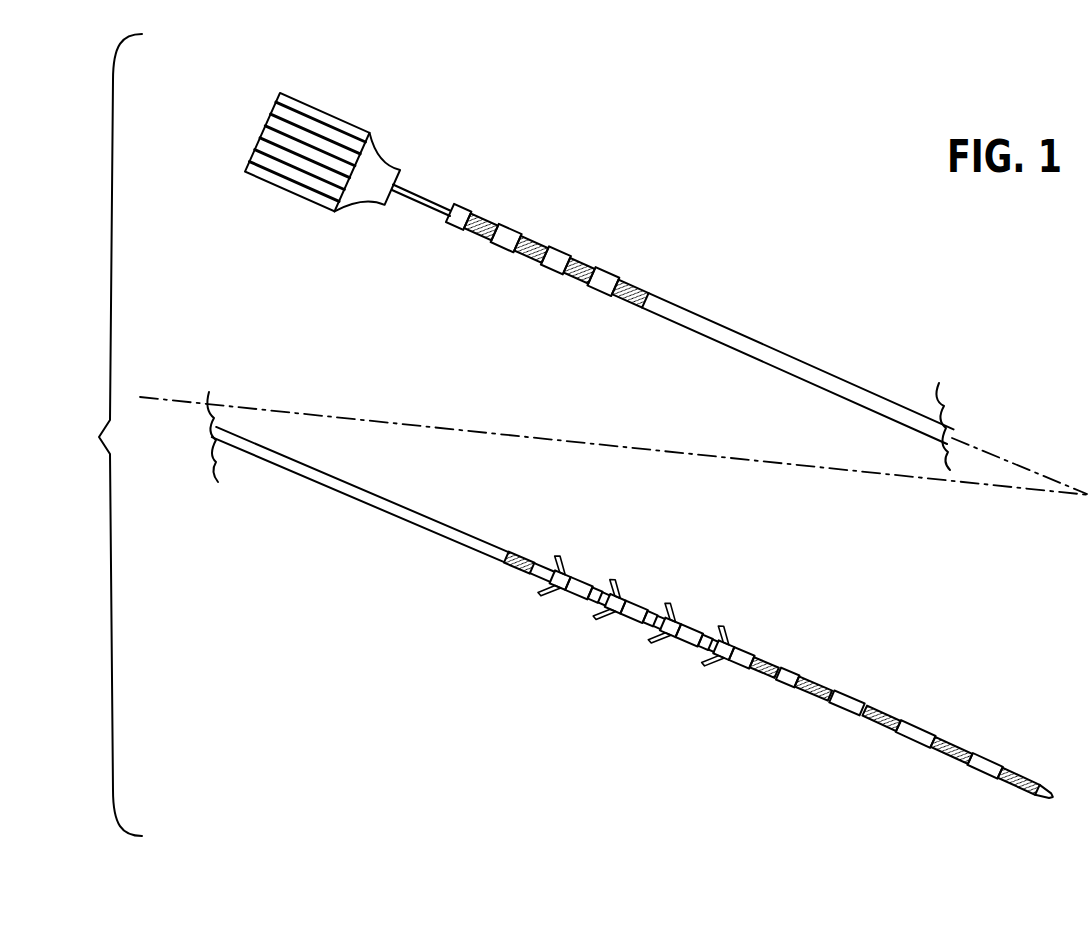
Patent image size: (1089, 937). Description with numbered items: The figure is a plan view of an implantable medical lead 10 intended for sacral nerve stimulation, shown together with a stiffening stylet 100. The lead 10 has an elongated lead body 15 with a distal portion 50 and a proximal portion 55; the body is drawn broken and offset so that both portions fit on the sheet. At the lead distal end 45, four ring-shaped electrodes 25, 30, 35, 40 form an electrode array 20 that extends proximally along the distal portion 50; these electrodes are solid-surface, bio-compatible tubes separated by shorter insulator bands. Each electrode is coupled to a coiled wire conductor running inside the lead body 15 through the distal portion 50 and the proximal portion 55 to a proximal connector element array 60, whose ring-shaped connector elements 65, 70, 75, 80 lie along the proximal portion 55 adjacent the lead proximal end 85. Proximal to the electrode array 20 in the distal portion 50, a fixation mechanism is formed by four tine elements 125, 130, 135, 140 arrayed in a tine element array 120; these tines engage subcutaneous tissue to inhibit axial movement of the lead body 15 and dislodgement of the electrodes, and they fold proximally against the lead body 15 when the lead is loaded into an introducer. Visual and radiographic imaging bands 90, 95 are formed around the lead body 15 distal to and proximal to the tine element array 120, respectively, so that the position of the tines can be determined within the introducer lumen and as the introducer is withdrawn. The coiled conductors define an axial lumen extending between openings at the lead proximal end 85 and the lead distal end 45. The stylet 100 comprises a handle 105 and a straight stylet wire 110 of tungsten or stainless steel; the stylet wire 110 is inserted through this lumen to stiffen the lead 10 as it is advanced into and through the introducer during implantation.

The implantable medical lead 10 is at (91, 451).
The lead body 15 is at (781, 347).
The electrode array 20 is at (1042, 786).
The ring-shaped electrode 25 is at (1012, 785).
The ring-shaped electrode 30 is at (947, 756).
The ring-shaped electrode 35 is at (879, 725).
The ring-shaped electrode 40 is at (812, 696).
The lead distal end 45 is at (1048, 794).
The distal portion 50 is at (500, 538).
The proximal portion 55 is at (500, 542).
The proximal connector element array 60 is at (431, 268).
The ring-shaped connector element 65 is at (626, 300).
The ring-shaped connector element 70 is at (574, 279).
The ring-shaped connector element 75 is at (529, 256).
The ring-shaped connector element 80 is at (477, 226).
The lead proximal end 85 is at (452, 226).
The visual and radiographic imaging band 90 is at (763, 676).
The visual and radiographic imaging band 95 is at (515, 573).
The stiffening stylet 100 is at (389, 126).
The handle 105 is at (297, 198).
The stylet wire 110 is at (416, 218).
The tine element array 120 is at (760, 648).
The tine element 125 is at (730, 677).
The tine element 130 is at (677, 659).
The tine element 135 is at (620, 632).
The tine element 140 is at (568, 610).